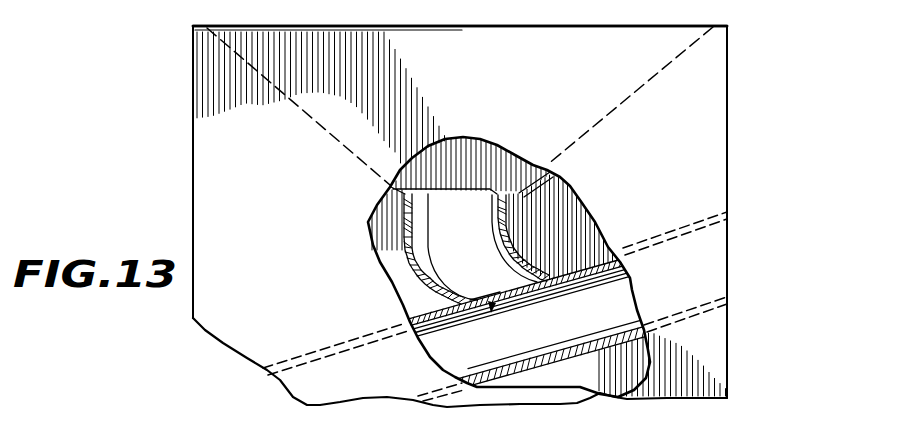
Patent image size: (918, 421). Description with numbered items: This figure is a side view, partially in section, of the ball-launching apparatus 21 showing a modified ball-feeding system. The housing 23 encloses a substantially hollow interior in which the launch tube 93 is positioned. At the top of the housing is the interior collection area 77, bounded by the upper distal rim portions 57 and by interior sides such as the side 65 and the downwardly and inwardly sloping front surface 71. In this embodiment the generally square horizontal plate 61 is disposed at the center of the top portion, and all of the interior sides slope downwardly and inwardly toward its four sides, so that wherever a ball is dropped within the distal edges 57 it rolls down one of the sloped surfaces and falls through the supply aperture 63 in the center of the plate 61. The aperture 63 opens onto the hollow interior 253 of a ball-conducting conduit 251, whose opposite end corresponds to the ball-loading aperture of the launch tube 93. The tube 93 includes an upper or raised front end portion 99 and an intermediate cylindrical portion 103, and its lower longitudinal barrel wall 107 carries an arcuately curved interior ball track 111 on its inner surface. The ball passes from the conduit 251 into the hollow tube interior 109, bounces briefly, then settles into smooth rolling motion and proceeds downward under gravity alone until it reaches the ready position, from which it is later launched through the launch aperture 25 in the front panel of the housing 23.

The ball-launching apparatus 21 is at (746, 92).
The housing 23 is at (183, 106).
The interior collection area 77 is at (372, 19).
The upper distal rim portions 57 is at (461, 10).
The interior side 65 is at (333, 131).
The downwardly and inwardly sloping front surface 71 is at (617, 106).
The supply aperture 63 is at (457, 180).
The square horizontal plate 61 is at (516, 213).
The ball-conducting conduit 251 is at (525, 249).
The hollow interior of ball-conducting conduit 253 is at (477, 244).
The lower longitudinal barrel wall 107 is at (492, 306).
The tube interior 109 is at (600, 314).
The interior ball track 111 is at (483, 366).
The intermediate cylindrical portion 103 is at (570, 353).
The upper front end portion 99 is at (709, 221).
The launch aperture 25 is at (727, 273).
The launch tube 93 is at (357, 330).